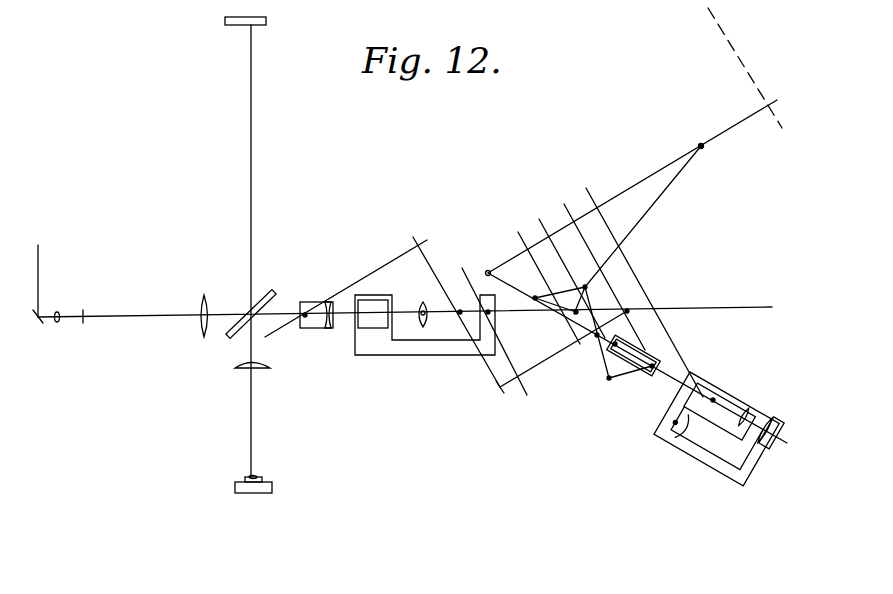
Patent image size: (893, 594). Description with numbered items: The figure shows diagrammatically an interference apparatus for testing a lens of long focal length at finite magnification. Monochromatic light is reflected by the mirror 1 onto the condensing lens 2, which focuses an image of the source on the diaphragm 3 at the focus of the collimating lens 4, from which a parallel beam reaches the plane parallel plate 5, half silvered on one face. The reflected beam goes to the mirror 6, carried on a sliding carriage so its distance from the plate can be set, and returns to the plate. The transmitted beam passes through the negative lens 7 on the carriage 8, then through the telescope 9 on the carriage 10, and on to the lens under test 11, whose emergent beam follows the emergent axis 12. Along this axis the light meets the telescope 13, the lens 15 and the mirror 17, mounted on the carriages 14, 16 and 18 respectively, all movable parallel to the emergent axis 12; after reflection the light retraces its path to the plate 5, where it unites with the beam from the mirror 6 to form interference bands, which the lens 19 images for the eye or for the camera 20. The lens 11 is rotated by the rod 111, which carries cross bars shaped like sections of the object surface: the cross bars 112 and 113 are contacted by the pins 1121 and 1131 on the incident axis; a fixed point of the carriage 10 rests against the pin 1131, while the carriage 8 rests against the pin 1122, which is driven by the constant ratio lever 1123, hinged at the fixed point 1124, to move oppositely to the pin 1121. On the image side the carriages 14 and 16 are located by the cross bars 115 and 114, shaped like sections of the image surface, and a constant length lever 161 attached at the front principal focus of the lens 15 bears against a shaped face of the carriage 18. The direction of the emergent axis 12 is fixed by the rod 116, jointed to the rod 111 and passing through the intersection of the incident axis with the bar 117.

The mirror 1 is at (36, 331).
The condensing lens 2 is at (55, 332).
The diaphragm 3 is at (81, 331).
The collimating lens 4 is at (203, 336).
The plane parallel plate 5 is at (259, 296).
The mirror 6 is at (251, 29).
The negative lens 7 is at (329, 303).
The carriage 8 is at (312, 325).
The telescope 9 is at (380, 320).
The carriage 10 is at (360, 345).
The lens under test 11 is at (424, 318).
The emergent axis 12 is at (780, 444).
The telescope 13 is at (637, 349).
The carriage 14 is at (642, 378).
The lens 15 is at (741, 397).
The carriage 16 is at (712, 423).
The mirror 17 is at (770, 413).
The carriage 18 is at (709, 442).
The lens 19 is at (262, 368).
The camera 20 is at (240, 487).
The rod 111 is at (628, 190).
The cross bar 112 is at (585, 241).
The cross bar 113 is at (472, 253).
The cross bar 114 is at (680, 332).
The cross bar 115 is at (505, 250).
The rod 116 is at (645, 219).
The bar 117 is at (533, 230).
The constant length lever 161 is at (670, 448).
The pin 1121 is at (628, 311).
The pin 1122 is at (305, 314).
The constant ratio lever 1123 is at (545, 360).
The fixed point 1124 is at (459, 316).
The pin 1131 is at (490, 314).